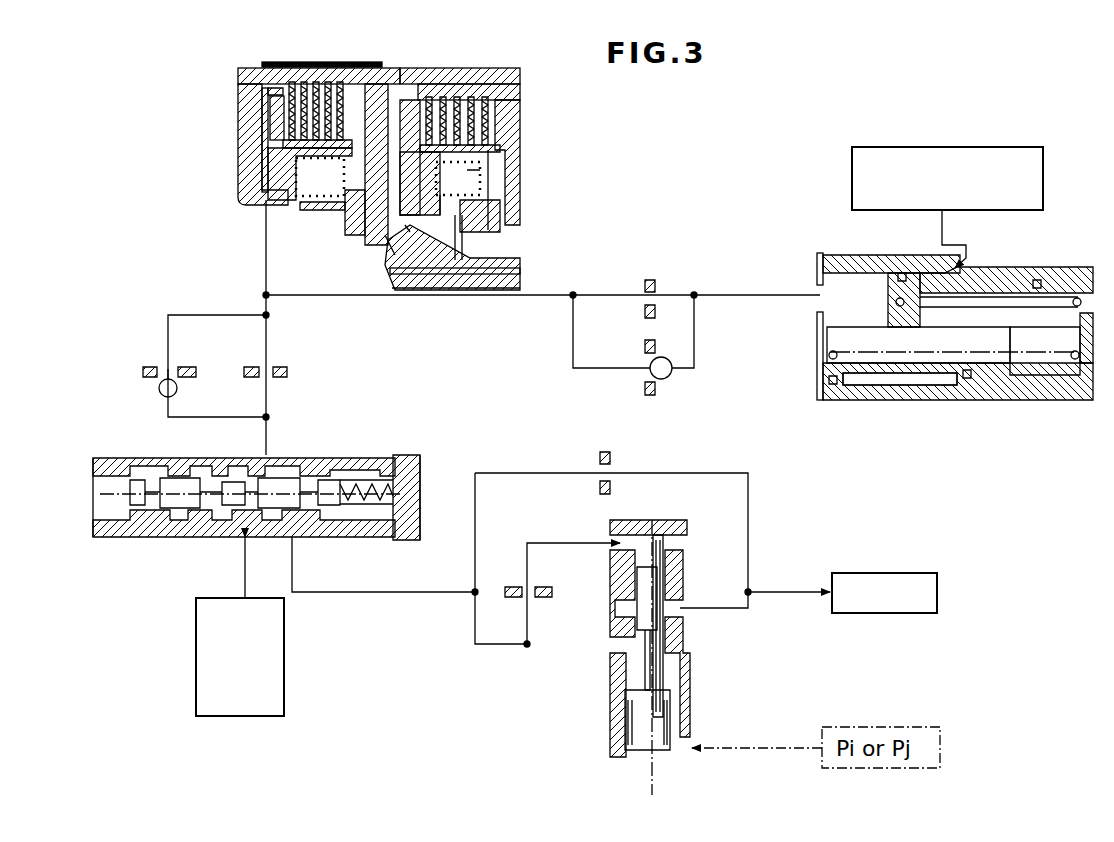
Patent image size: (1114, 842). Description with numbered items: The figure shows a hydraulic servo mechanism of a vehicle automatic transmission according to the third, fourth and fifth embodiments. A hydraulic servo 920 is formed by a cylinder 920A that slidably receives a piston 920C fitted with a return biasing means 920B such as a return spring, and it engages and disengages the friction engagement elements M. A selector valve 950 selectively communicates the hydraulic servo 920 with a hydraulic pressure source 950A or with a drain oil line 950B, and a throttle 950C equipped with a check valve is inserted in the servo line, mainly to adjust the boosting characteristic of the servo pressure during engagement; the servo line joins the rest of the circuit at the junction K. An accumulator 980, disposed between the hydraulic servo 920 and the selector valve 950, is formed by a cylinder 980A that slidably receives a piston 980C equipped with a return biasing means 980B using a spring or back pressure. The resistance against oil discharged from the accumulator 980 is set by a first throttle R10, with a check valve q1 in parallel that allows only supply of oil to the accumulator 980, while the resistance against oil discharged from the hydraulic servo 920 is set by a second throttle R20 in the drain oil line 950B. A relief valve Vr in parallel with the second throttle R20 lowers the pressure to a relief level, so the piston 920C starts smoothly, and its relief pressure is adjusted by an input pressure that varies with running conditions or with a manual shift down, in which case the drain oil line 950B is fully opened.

The hydraulic servo 920 is at (240, 131).
The cylinder 920A is at (248, 158).
The return biasing means 920B is at (318, 185).
The piston 920C is at (250, 175).
The friction engagement elements M is at (306, 84).
The hydraulic line junction K is at (266, 295).
The selector valve 950 is at (366, 447).
The hydraulic pressure source 950A is at (284, 655).
The drain oil line 950B is at (786, 590).
The throttle 950C is at (276, 366).
The first throttle R10 is at (650, 283).
The second throttle R20 is at (615, 458).
The check valve q1 is at (650, 372).
The relief valve Vr is at (596, 690).
The accumulator 980 is at (1028, 405).
The cylinder 980A is at (1072, 388).
The return biasing means 980B is at (1060, 305).
The piston 980C is at (907, 380).